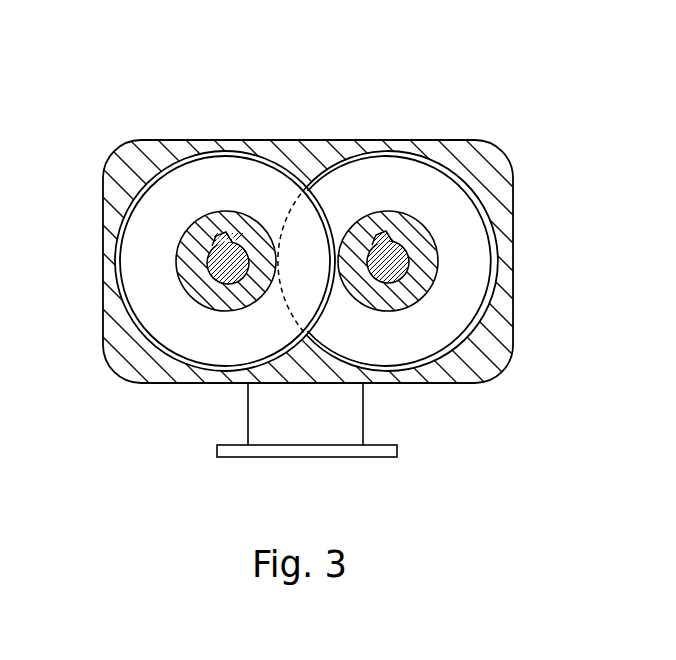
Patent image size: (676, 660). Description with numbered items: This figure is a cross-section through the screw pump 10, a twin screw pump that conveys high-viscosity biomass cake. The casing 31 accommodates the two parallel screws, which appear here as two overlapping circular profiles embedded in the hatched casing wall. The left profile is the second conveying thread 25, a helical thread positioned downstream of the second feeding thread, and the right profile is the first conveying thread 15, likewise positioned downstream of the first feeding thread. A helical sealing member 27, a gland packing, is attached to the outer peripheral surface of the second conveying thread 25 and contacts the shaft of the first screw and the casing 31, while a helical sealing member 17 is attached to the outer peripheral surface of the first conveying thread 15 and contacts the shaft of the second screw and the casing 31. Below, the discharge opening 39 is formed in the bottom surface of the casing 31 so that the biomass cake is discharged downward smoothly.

The screw pump 10 is at (114, 94).
The first conveying thread 15 is at (427, 170).
The sealing member 17 is at (397, 152).
The second conveying thread 25 is at (243, 172).
The sealing member 27 is at (213, 153).
The casing 31 is at (312, 134).
The discharge opening 39 is at (325, 458).